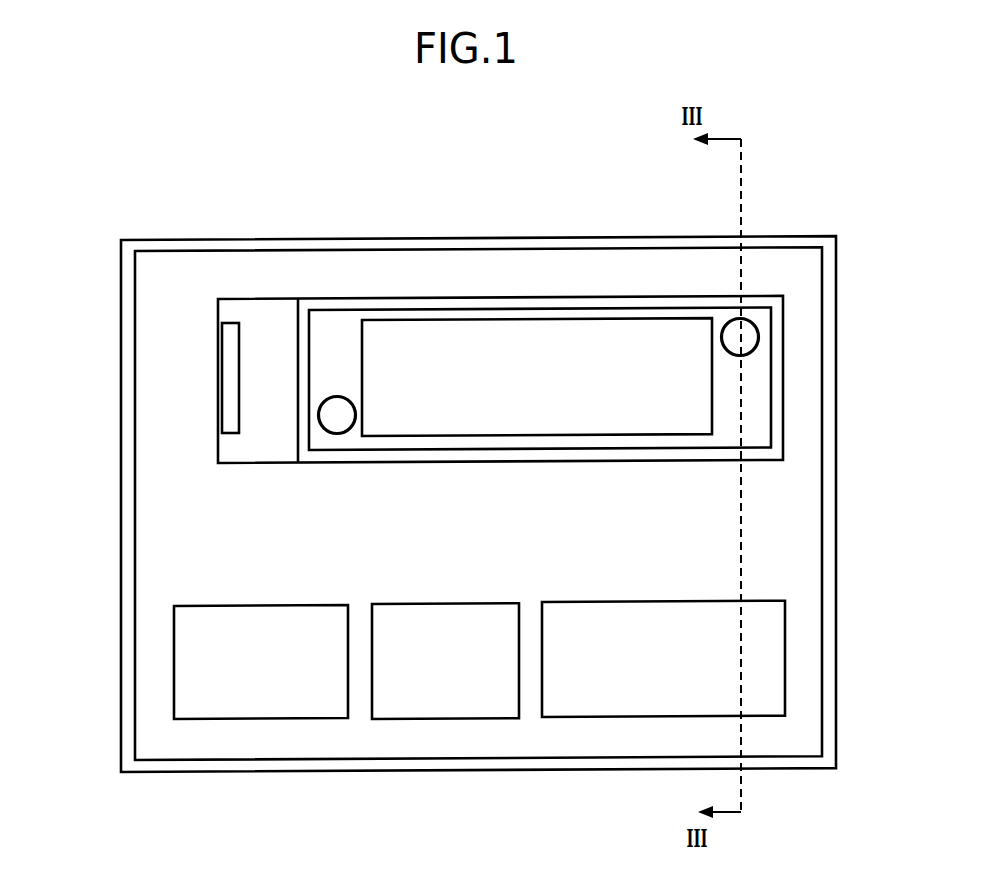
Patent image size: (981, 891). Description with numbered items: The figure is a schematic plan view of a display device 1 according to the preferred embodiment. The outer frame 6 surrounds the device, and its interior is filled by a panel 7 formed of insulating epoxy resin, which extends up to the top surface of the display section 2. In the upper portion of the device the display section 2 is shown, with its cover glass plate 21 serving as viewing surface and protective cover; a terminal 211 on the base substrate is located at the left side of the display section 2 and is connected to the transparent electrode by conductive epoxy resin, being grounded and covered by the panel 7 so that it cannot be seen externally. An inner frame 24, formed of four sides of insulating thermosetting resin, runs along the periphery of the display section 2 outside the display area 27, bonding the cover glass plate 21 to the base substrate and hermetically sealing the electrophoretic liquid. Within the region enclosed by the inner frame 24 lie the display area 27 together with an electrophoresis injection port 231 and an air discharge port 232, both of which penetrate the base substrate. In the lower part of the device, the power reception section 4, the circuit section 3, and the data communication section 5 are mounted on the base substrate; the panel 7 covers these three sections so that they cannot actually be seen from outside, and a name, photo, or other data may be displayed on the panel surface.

The display device 1 is at (129, 144).
The display section 2 is at (426, 290).
The cover glass plate 21 is at (250, 313).
The terminal 211 is at (218, 362).
The electrophoresis injection port 231 is at (337, 403).
The air discharge port 232 is at (760, 335).
The inner frame 24 is at (507, 302).
The display area 27 is at (592, 337).
The panel 7 is at (162, 523).
The outer frame 6 is at (155, 772).
The power reception section 4 is at (238, 719).
The circuit section 3 is at (435, 719).
The data communication section 5 is at (620, 719).